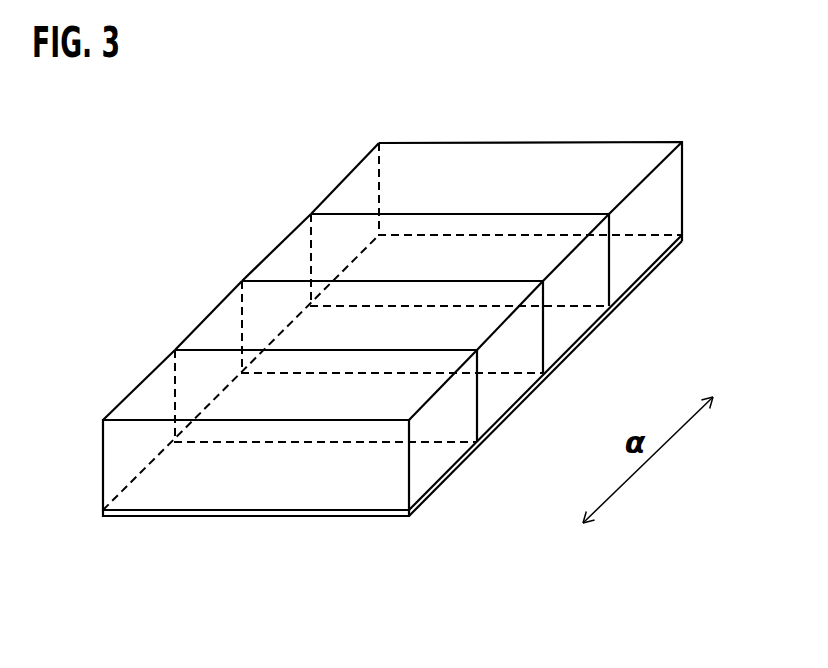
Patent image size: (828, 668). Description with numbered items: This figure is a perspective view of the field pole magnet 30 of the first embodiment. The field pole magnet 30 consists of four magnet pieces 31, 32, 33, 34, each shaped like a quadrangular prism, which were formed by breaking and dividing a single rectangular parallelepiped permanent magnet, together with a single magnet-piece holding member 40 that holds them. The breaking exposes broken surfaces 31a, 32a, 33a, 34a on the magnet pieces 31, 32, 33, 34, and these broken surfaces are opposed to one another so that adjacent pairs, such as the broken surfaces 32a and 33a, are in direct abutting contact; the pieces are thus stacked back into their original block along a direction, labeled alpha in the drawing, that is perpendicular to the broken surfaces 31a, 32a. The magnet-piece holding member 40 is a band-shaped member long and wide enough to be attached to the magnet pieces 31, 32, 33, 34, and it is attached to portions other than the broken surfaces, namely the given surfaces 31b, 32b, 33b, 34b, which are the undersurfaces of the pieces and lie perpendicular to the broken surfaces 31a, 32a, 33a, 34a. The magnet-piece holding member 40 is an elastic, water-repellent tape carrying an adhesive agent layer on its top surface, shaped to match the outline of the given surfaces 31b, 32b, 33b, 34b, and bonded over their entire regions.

The field pole magnet 30 is at (406, 312).
The magnet piece 31 is at (274, 416).
The broken surface 31a is at (167, 354).
The given surface 31b is at (237, 502).
The magnet piece 32 is at (366, 343).
The broken surface 32a is at (232, 277).
The given surface 32b is at (503, 413).
The magnet piece 33 is at (444, 261).
The broken surface 33a is at (297, 212).
The given surface 33b is at (583, 331).
The magnet piece 34 is at (517, 228).
The broken surface 34a is at (592, 285).
The given surface 34b is at (637, 258).
The magnet-piece holding member 40 is at (413, 520).